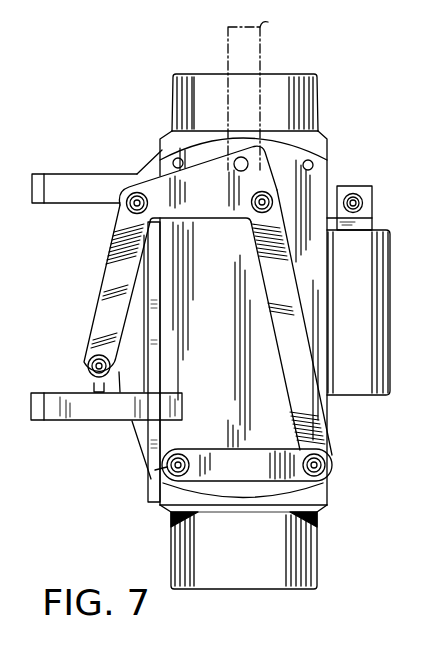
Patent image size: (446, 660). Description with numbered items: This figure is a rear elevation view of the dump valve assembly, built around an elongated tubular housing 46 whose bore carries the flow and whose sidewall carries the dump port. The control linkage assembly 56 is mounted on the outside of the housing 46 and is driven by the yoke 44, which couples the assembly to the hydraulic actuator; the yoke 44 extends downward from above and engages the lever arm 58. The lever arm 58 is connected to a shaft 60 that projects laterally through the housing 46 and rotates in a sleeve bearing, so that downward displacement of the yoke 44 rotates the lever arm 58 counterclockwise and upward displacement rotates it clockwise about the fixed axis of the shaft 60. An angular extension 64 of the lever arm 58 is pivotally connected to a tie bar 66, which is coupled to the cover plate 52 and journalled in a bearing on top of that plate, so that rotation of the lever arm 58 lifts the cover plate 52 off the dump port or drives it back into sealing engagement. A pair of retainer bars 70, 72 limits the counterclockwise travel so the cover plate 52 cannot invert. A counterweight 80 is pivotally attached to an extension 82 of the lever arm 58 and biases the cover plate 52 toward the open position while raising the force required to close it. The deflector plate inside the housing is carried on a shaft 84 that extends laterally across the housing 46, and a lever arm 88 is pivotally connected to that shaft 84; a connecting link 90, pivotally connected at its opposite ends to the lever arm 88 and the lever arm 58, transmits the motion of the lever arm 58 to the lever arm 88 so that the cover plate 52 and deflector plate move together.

The yoke 44 is at (263, 55).
The tubular housing 46 is at (330, 150).
The cover plate 52 is at (141, 428).
The control linkage assembly 56 is at (92, 269).
The lever arm 58 is at (214, 175).
The shaft 60 is at (127, 208).
The angular extension 64 is at (103, 308).
The tie bar 66 is at (90, 360).
The retainer bar 70 is at (74, 186).
The retainer bar 72 is at (86, 410).
The counterweight 80 is at (373, 328).
The extension 82 is at (328, 197).
The shaft 84 is at (148, 480).
The lever arm 88 is at (259, 460).
The connecting link 90 is at (252, 257).